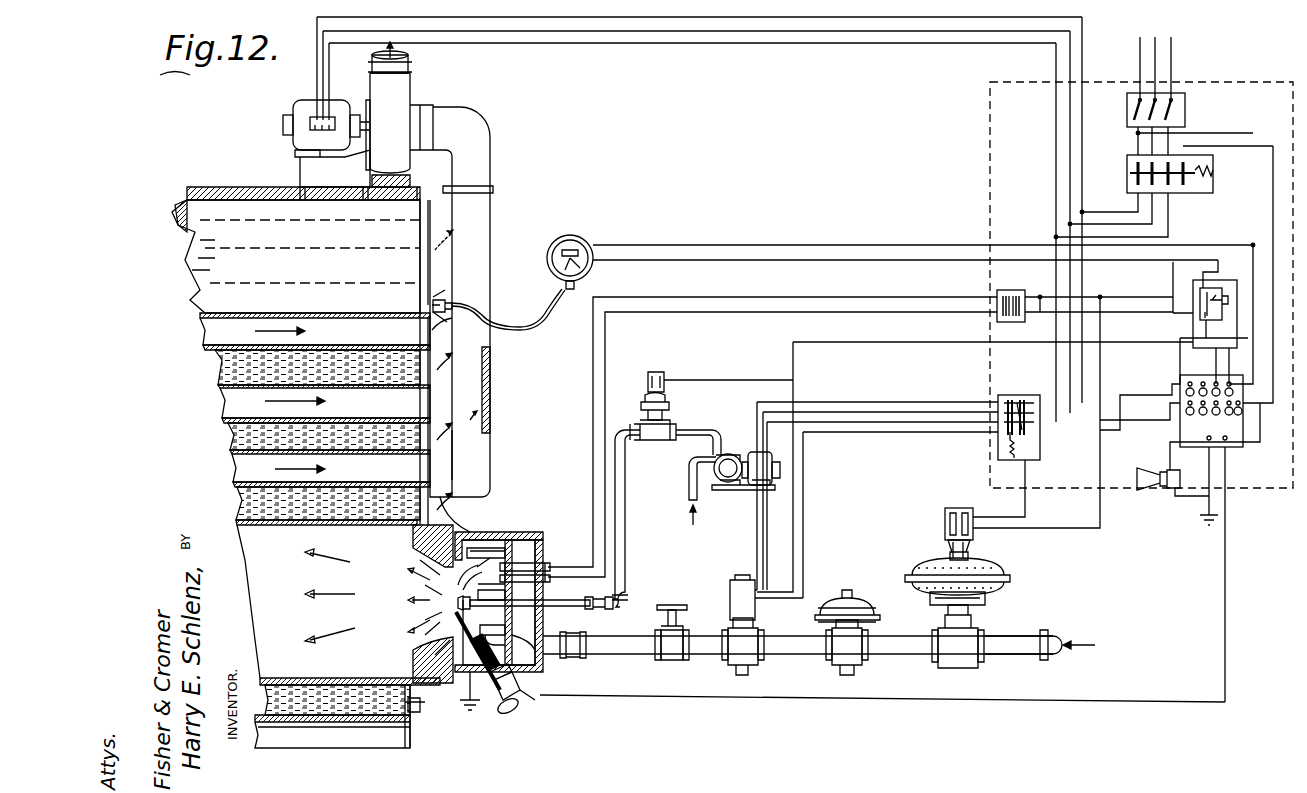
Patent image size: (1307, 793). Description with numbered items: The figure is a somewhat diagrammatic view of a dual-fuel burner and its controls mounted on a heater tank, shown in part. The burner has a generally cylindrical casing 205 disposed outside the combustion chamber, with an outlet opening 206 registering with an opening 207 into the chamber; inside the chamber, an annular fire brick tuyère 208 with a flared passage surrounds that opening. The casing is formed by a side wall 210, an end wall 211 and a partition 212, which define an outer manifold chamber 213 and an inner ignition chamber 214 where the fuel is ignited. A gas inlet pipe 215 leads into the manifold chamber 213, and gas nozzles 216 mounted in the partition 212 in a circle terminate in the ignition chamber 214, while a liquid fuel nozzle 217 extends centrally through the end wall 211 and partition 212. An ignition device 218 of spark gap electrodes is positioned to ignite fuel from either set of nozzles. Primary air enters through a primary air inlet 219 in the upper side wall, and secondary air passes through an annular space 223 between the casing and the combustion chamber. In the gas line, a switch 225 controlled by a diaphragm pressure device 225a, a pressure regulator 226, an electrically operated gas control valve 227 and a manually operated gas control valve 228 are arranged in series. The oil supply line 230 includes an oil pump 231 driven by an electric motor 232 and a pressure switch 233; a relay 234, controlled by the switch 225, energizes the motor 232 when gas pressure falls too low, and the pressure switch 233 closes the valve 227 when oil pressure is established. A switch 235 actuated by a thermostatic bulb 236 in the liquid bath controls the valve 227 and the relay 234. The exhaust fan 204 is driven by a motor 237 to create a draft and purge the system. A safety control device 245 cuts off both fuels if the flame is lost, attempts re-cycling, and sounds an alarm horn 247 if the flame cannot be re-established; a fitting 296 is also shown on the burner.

The exhaust fan 204 is at (395, 108).
The casing 205 is at (555, 672).
The outlet opening 206 is at (412, 657).
The opening 207 is at (425, 572).
The fire brick tuyère 208 is at (412, 552).
The side wall 210 is at (505, 532).
The end wall 211 is at (512, 545).
The partition 212 is at (500, 540).
The manifold chamber 213 is at (528, 670).
The ignition chamber 214 is at (515, 695).
The gas inlet pipe 215 is at (1030, 655).
The gas nozzles 216 is at (512, 635).
The liquid fuel nozzle 217 is at (520, 600).
The ignition device 218 is at (540, 560).
The primary air inlet 219 is at (468, 525).
The space 223 is at (445, 701).
The switch 225 is at (978, 538).
The diaphragm pressure device 225a is at (1010, 588).
The pressure regulator 226 is at (847, 598).
The electrically operated gas control valve 227 is at (742, 583).
The manually operated gas control valve 228 is at (672, 598).
The oil supply line 230 is at (690, 490).
The oil pump 231 is at (730, 478).
The electric motor 232 is at (762, 478).
The pressure switch 233 is at (675, 413).
The relay 234 is at (990, 452).
The switch 235 is at (585, 222).
The thermostatic bulb 236 is at (432, 290).
The motor 237 is at (312, 140).
The safety control device 245 is at (1248, 450).
The alarm horn 247 is at (1172, 485).
The pilot burner fitting 296 is at (495, 712).